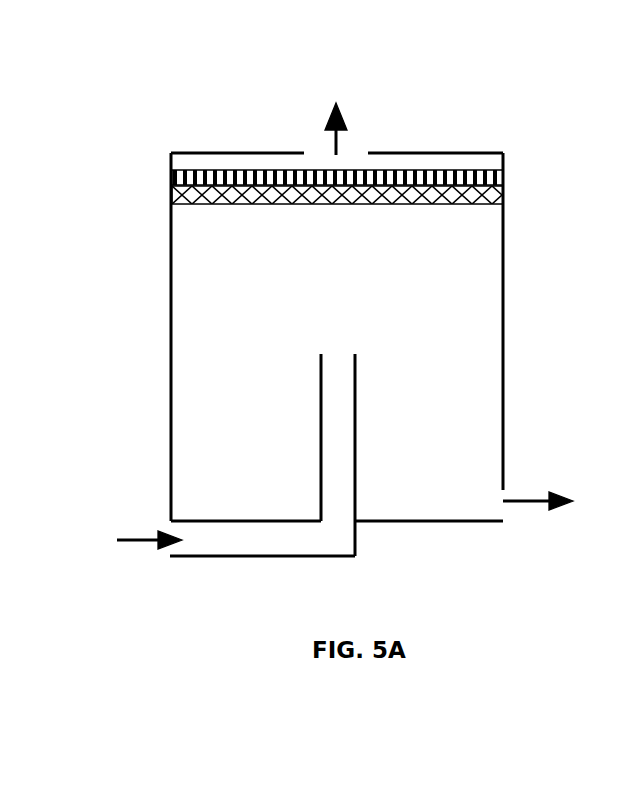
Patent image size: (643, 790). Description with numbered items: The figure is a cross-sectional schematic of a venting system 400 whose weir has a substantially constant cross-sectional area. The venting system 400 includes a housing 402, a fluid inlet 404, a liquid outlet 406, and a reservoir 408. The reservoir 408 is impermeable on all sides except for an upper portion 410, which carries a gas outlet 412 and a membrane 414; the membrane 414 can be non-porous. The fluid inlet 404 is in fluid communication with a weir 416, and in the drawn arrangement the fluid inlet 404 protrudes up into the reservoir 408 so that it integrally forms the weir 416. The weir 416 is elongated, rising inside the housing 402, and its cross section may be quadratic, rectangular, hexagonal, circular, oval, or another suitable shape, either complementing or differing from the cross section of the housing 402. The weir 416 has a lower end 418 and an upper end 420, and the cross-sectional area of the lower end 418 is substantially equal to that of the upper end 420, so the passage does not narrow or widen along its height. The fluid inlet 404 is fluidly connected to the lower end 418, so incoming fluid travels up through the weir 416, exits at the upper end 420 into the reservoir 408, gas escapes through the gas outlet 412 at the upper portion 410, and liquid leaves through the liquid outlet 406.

The venting system 400 is at (138, 90).
The housing 402 is at (170, 330).
The fluid inlet 404 is at (207, 540).
The liquid outlet 406 is at (497, 505).
The reservoir 408 is at (350, 301).
The upper portion 410 is at (410, 147).
The gas outlet 412 is at (313, 138).
The membrane 414 is at (504, 185).
The weir 416 is at (357, 433).
The lower end 418 is at (357, 505).
The upper end 420 is at (357, 354).